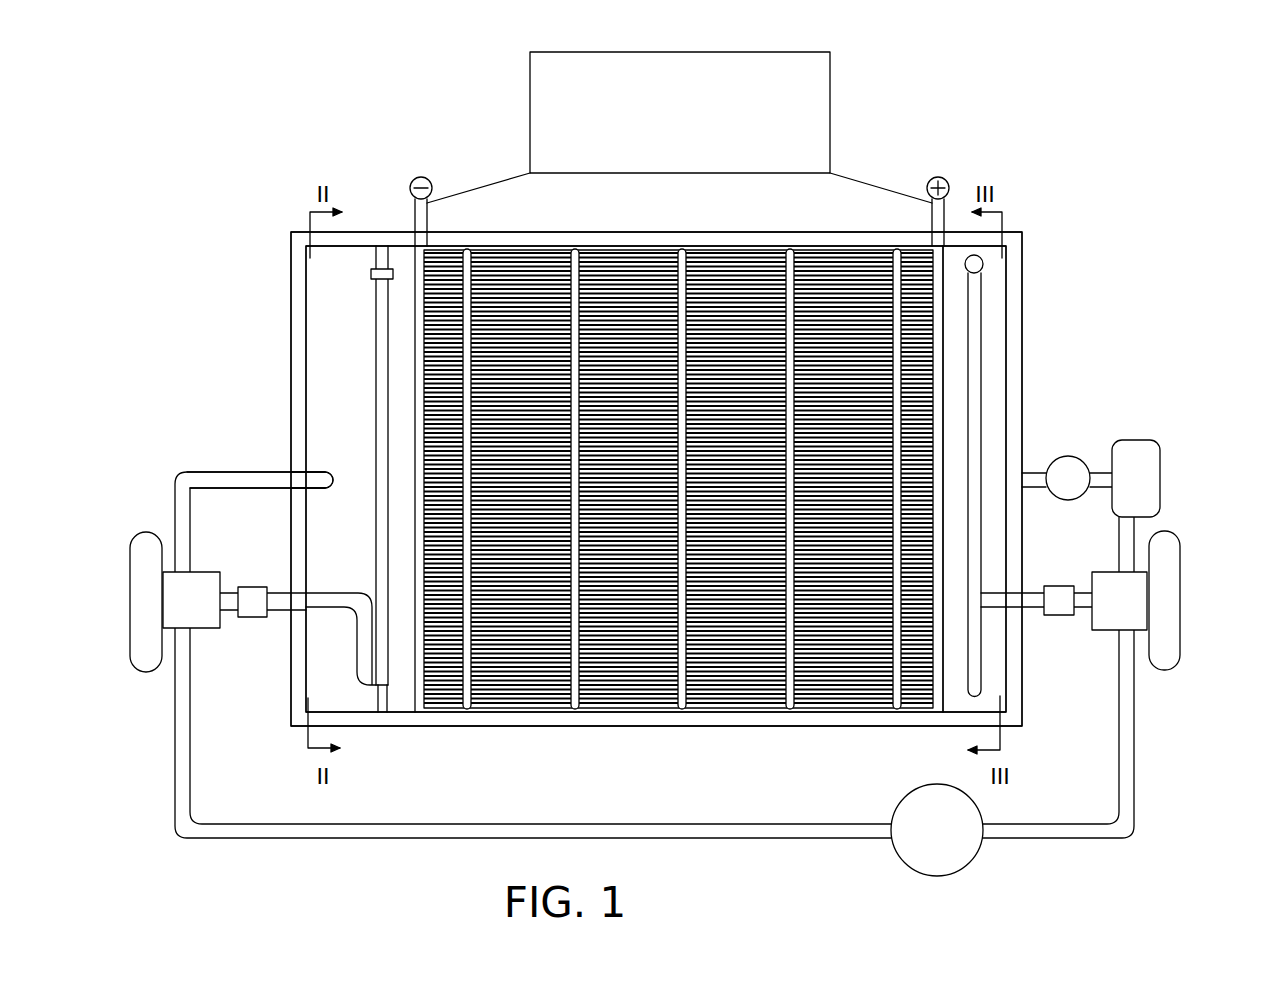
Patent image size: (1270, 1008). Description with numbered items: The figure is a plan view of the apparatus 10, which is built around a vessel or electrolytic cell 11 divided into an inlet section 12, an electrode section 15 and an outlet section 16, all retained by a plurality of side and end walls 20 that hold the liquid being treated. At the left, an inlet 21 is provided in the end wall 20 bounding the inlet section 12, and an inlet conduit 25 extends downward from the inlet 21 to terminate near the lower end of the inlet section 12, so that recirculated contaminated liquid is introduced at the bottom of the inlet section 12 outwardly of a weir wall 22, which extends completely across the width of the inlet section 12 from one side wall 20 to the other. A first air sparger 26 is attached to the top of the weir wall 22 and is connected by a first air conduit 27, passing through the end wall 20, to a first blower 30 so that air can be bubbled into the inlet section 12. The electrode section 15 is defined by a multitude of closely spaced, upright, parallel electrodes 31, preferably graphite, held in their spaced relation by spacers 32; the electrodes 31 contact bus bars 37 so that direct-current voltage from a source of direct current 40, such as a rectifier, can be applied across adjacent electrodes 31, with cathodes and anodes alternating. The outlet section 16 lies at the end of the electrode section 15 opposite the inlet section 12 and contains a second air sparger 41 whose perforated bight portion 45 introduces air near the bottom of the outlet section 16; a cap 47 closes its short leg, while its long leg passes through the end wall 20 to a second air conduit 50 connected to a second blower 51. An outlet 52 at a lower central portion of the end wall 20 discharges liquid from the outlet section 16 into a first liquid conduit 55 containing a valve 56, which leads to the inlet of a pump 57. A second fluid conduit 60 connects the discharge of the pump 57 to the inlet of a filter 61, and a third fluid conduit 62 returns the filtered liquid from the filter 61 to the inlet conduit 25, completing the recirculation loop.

The apparatus 10 is at (1030, 177).
The vessel or electrolytic cell 11 is at (672, 728).
The inlet section 12 is at (333, 328).
The electrode section 15 is at (678, 514).
The outlet section 16 is at (955, 702).
The side and end walls 20 is at (694, 240).
The inlet 21 is at (290, 494).
The weir wall 22 is at (380, 712).
The inlet conduit 25 is at (222, 489).
The first air sparger 26 is at (377, 436).
The first air conduit 27 is at (356, 632).
The first blower 30 is at (206, 630).
The electrodes 31 is at (830, 690).
The spacers 32 is at (895, 708).
The bus bars 37 is at (415, 294).
The source of direct current 40 is at (832, 90).
The second air sparger 41 is at (978, 421).
The bight portion 45 is at (976, 444).
The cap 47 is at (984, 264).
The second air conduit 50 is at (1026, 610).
The second blower 51 is at (1182, 606).
The outlet 52 is at (1024, 486).
The first liquid conduit 55 is at (1108, 462).
The valve 56 is at (1078, 458).
The pump 57 is at (1162, 462).
The second fluid conduit 60 is at (1136, 724).
The filter 61 is at (968, 862).
The third fluid conduit 62 is at (686, 840).